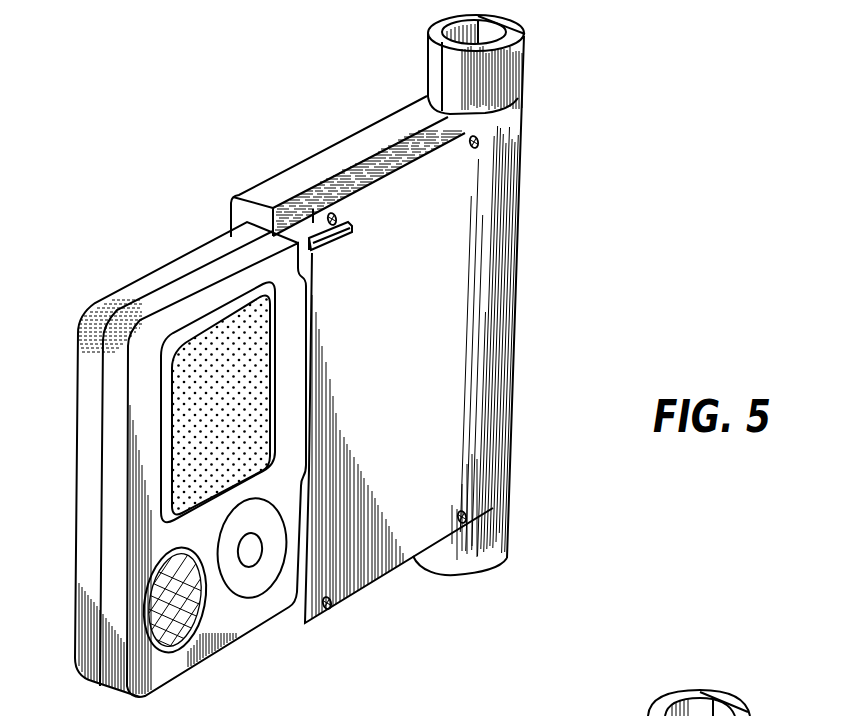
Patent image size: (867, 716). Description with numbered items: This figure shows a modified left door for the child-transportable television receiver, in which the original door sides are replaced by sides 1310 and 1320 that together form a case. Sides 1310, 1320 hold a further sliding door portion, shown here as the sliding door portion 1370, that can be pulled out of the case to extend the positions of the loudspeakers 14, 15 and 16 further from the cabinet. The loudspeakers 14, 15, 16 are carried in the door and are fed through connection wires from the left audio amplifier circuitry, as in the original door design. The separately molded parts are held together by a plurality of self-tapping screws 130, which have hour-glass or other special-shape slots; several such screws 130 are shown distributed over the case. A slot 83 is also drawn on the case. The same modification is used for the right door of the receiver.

The housing cover 1370 is at (103, 292).
The loudspeaker 15 is at (180, 465).
The loudspeaker 14 is at (245, 588).
The loudspeaker 16 is at (177, 637).
The door side 1320 is at (357, 138).
The door side 1310 is at (483, 123).
The slot tab 83 is at (355, 227).
The self-tapping screws 130 is at (330, 214).